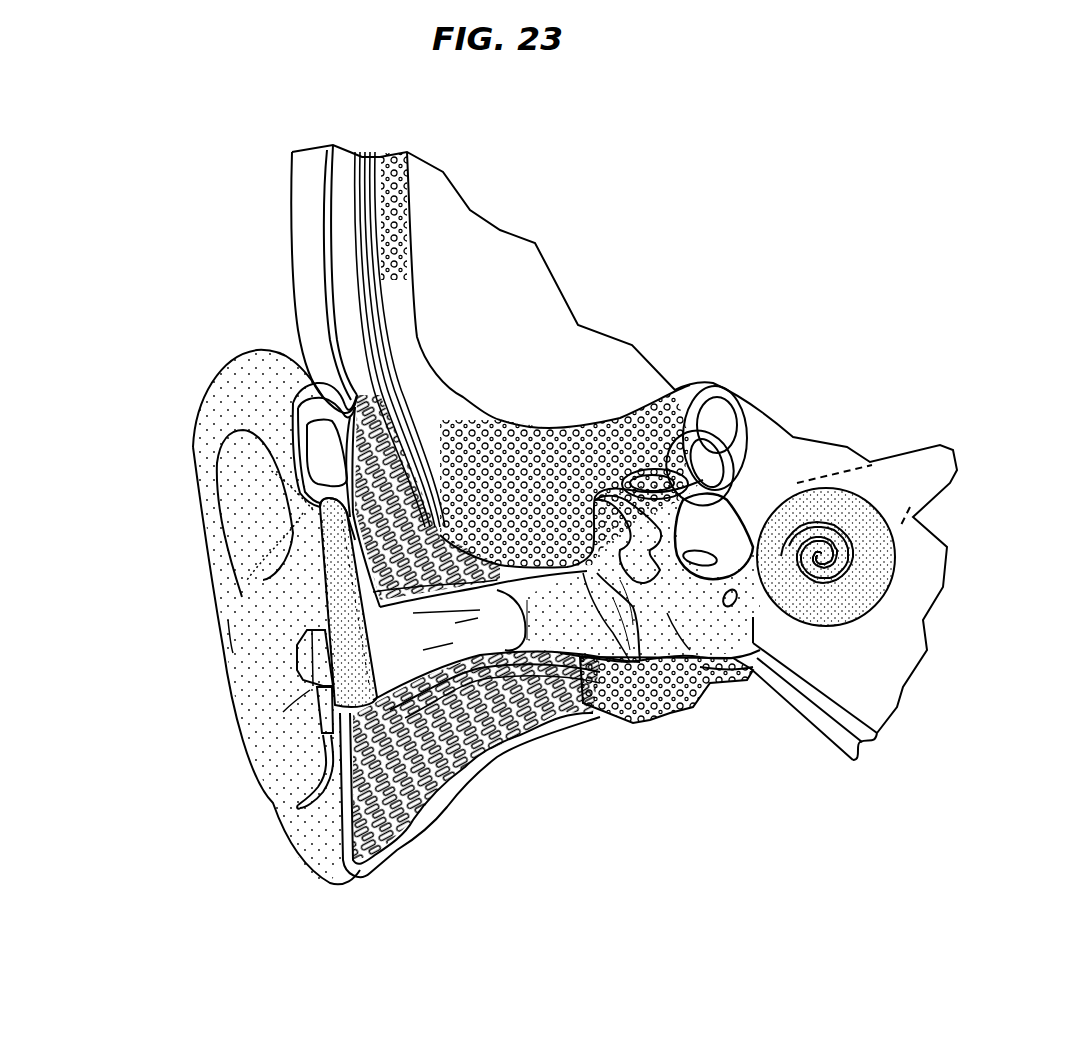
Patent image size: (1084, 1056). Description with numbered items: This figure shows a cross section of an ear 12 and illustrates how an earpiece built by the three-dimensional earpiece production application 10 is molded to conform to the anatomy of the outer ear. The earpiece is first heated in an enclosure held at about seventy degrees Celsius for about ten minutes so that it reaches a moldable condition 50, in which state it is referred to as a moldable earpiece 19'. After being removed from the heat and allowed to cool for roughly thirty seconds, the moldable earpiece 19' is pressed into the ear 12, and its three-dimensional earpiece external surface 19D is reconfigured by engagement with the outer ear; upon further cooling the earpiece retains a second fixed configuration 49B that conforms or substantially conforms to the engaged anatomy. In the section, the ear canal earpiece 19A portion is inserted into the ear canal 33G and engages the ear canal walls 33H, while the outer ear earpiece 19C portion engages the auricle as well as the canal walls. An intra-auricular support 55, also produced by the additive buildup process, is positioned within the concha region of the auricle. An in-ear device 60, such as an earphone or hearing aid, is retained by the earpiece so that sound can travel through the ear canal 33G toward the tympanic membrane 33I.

The three-dimensional earpiece production application 10 is at (766, 368).
The ear 12 is at (188, 418).
The intra-auricular support 55 is at (330, 580).
The moldable earpiece 19' is at (209, 602).
The moldable condition 50 is at (328, 605).
The second fixed configuration 49B is at (356, 605).
The outer ear earpiece 19C is at (350, 537).
The in-ear device 60 is at (297, 668).
The three-dimensional earpiece external surface 19D is at (353, 712).
The ear canal earpiece 19A is at (510, 640).
The ear canal 33G is at (549, 613).
The ear canal walls 33H is at (620, 580).
The tympanic membrane 33I is at (613, 598).